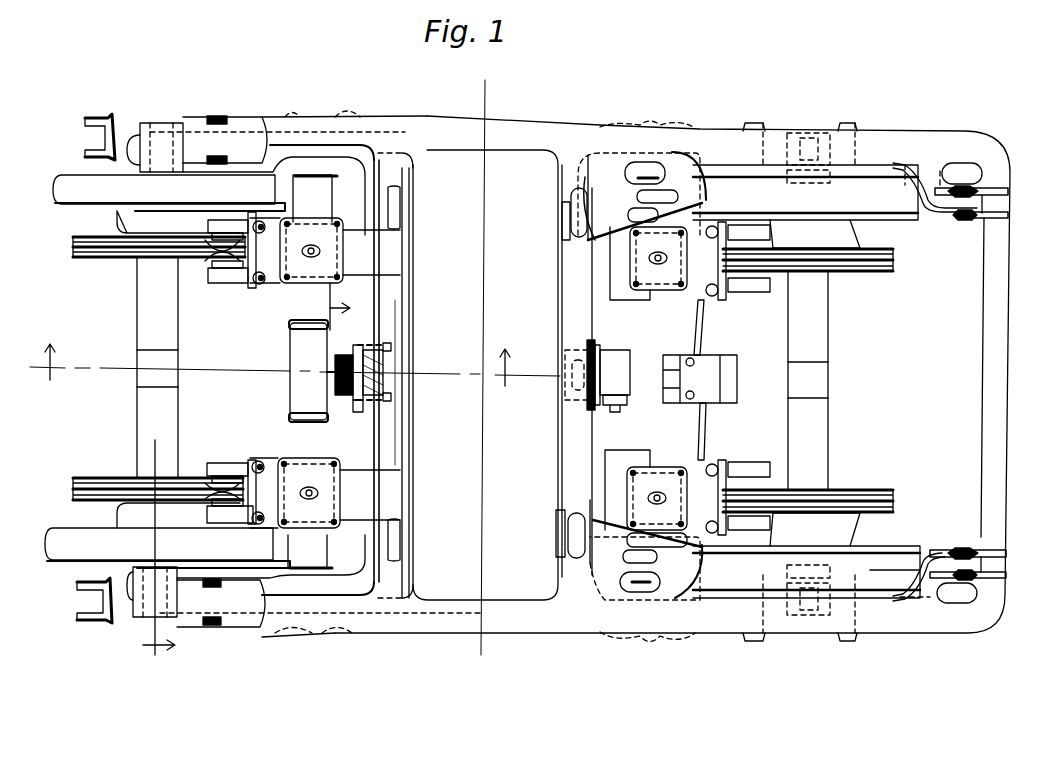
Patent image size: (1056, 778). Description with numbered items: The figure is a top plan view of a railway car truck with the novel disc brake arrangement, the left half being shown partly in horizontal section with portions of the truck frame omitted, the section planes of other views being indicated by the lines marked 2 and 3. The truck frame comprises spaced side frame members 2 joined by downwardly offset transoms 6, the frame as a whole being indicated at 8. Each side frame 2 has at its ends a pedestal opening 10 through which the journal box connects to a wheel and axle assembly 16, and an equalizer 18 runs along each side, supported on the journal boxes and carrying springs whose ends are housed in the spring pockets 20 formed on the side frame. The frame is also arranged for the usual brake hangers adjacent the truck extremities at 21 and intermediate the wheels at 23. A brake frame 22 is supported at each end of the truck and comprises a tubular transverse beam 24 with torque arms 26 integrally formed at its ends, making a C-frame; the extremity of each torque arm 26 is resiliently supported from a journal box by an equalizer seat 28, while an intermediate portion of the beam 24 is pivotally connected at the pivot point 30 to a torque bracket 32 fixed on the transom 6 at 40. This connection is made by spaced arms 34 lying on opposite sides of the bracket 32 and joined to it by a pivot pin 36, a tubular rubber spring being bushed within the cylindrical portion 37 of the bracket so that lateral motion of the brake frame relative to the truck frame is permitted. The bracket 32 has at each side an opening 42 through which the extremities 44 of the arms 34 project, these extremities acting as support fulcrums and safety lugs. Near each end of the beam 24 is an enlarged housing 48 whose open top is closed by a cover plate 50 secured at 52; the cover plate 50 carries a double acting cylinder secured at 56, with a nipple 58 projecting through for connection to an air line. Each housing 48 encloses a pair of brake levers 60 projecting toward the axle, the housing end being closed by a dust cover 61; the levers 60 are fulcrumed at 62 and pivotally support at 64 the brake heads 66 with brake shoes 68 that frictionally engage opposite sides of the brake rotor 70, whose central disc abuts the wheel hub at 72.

The side frame member 2 is at (524, 107).
The section line 3- 3 is at (246, 479).
The transom 6 is at (405, 260).
The frame 8 is at (1000, 405).
The pedestal opening 10 is at (116, 118).
The wheel and axle assembly 16 is at (52, 182).
The equalizer 18 is at (198, 122).
The spring pocket 20 is at (314, 114).
The brake hanger location 21 is at (962, 220).
The brake frame 22 is at (344, 204).
The brake hanger location 23 is at (685, 200).
The transverse beam 24 is at (290, 381).
The torque arm 26 is at (234, 160).
The equalizer seat 28 is at (140, 150).
The pivot point 30 is at (353, 345).
The torque bracket 32 is at (386, 373).
The spaced arm 34 is at (330, 346).
The pivot pin 36 is at (355, 414).
The cylindrical portion 37 is at (300, 362).
The securing means 40 is at (563, 353).
The opening 42 is at (380, 343).
The arm extremity 44 is at (392, 351).
The housing 48 is at (258, 292).
The cover plate 50 is at (345, 242).
The cover plate fastening 52 is at (400, 228).
The cylinder fastening 56 is at (305, 245).
The nipple 58 is at (322, 252).
The brake lever 60 is at (256, 222).
The dust cover 61 is at (250, 288).
The lever fulcrum 62 is at (253, 212).
The brake head pivot 64 is at (216, 222).
The brake head 66 is at (205, 222).
The brake shoe 68 is at (205, 230).
The brake rotor 70 is at (106, 257).
The hub abutment 72 is at (135, 223).